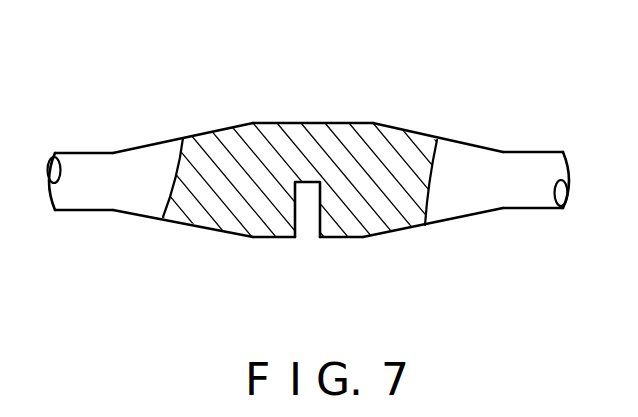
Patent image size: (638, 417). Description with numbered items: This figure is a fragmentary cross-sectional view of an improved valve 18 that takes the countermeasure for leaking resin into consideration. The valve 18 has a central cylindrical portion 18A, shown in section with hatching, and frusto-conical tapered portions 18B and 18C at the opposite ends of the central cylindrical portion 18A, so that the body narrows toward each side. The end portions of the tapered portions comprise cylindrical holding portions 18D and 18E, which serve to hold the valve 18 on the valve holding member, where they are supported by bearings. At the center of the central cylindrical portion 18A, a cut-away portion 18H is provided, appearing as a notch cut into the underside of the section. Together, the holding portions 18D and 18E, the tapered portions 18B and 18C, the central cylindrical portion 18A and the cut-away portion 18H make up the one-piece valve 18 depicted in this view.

The valve 18 is at (366, 73).
The central cylindrical portion 18A is at (368, 103).
The frusto-conical tapered portion 18B is at (493, 103).
The frusto-conical tapered portion 18C is at (245, 103).
The cylindrical holding portion 18D is at (582, 103).
The cylindrical holding portion 18E is at (113, 103).
The cut-away portion 18H is at (309, 218).